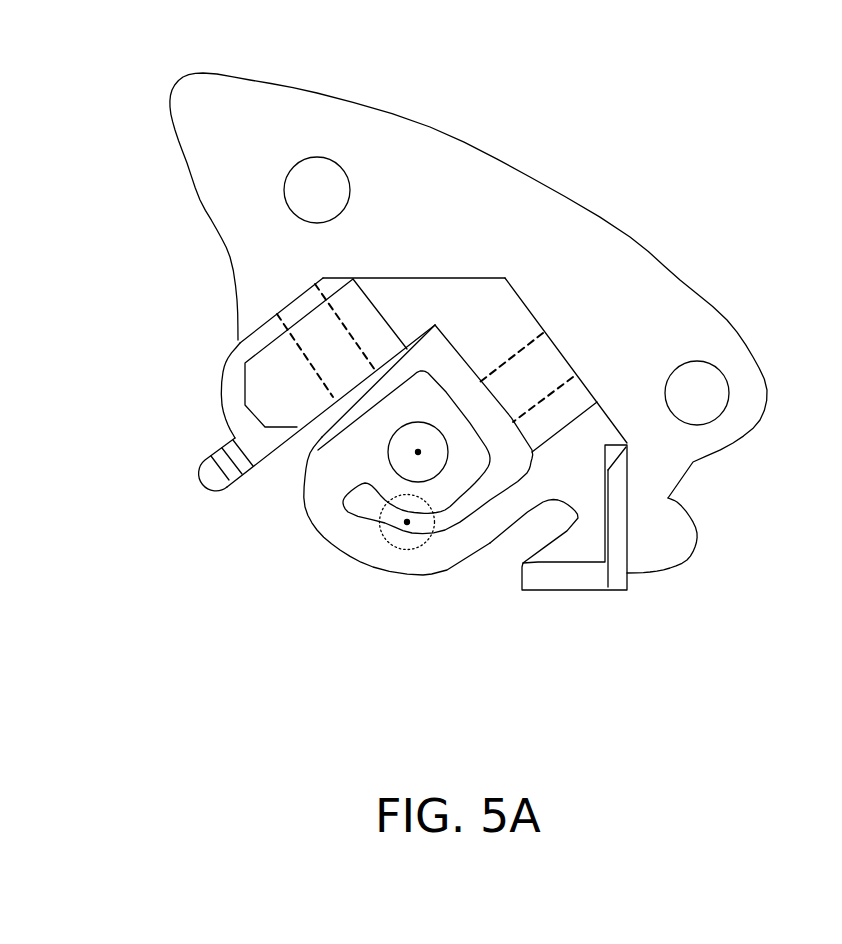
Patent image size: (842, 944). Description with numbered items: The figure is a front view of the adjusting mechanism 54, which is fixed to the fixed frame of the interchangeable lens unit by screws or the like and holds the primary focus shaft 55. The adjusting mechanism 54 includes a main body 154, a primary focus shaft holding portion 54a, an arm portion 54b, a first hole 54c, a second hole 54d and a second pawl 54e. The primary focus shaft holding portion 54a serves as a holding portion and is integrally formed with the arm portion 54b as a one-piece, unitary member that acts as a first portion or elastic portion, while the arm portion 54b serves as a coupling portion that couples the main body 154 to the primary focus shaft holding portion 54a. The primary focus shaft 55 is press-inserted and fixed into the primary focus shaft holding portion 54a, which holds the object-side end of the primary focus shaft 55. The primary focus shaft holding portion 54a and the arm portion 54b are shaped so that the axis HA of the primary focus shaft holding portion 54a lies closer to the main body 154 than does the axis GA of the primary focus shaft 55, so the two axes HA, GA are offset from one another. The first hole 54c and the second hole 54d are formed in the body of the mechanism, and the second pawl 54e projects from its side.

The adjusting mechanism 54 is at (608, 100).
The main body 154 is at (622, 255).
The primary focus shaft holding portion 54a is at (372, 462).
The arm portion 54b is at (467, 557).
The first hole 54c is at (328, 370).
The second hole 54d is at (518, 388).
The second pawl 54e is at (210, 449).
The primary focus shaft 55 is at (386, 543).
The axis of the primary focus shaft holding portion HA is at (418, 452).
The axis of the primary focus shaft GA is at (407, 522).